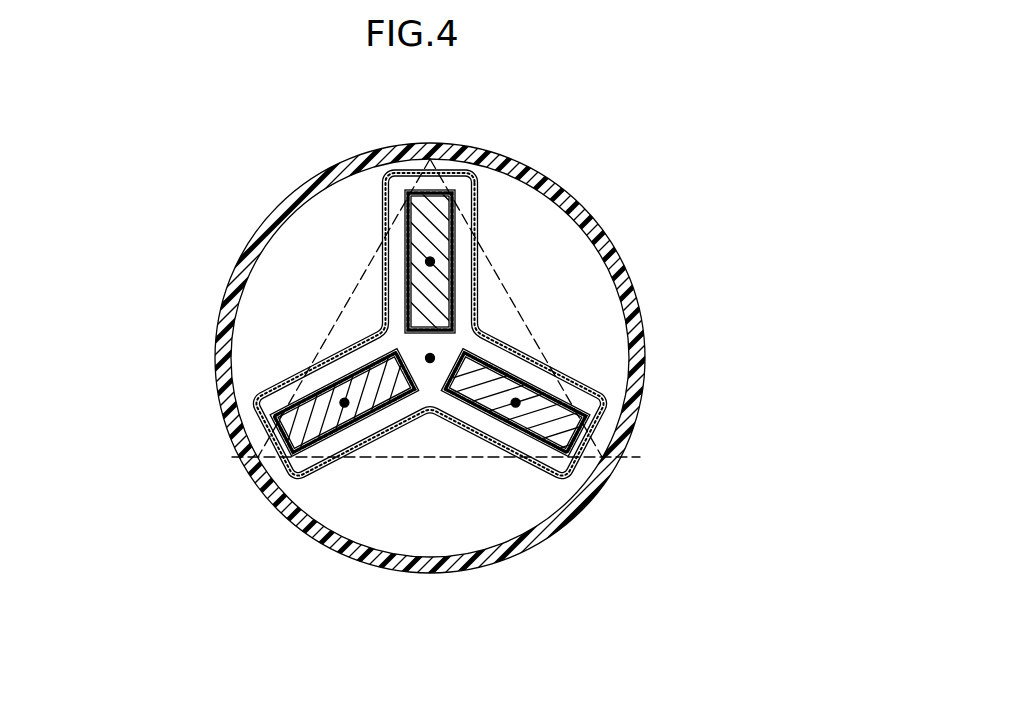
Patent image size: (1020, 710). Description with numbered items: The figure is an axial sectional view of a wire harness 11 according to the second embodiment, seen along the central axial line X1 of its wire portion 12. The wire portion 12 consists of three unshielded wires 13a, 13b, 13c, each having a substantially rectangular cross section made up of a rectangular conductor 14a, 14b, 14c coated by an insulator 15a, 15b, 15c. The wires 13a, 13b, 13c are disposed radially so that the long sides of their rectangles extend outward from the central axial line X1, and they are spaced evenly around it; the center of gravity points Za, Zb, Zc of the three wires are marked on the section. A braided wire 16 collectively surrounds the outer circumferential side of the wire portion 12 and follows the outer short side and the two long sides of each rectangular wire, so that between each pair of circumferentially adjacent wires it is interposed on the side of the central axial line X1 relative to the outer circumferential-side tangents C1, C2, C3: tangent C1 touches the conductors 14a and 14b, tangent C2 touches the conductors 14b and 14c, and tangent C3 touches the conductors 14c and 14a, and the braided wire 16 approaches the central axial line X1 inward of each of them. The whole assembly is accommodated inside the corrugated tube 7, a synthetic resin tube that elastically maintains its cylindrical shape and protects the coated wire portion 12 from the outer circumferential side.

The wire harness 11 is at (148, 158).
The corrugated tube 7 is at (646, 343).
The braided wire 16 is at (350, 456).
The wire portion 12 is at (415, 319).
The wire 13a is at (370, 91).
The wire 13b is at (155, 410).
The wire 13c is at (698, 462).
The conductor 14a is at (432, 188).
The conductor 14b is at (286, 459).
The conductor 14c is at (592, 460).
The insulator 15a is at (420, 201).
The insulator 15b is at (272, 414).
The insulator 15c is at (583, 446).
The center of gravity point Za is at (433, 258).
The center of gravity point Zb is at (343, 406).
The center of gravity point Zc is at (518, 405).
The central axial line X1 is at (433, 355).
The outer circumferential-side tangent C1 is at (363, 282).
The outer circumferential-side tangent C2 is at (414, 457).
The outer circumferential-side tangent C3 is at (430, 358).